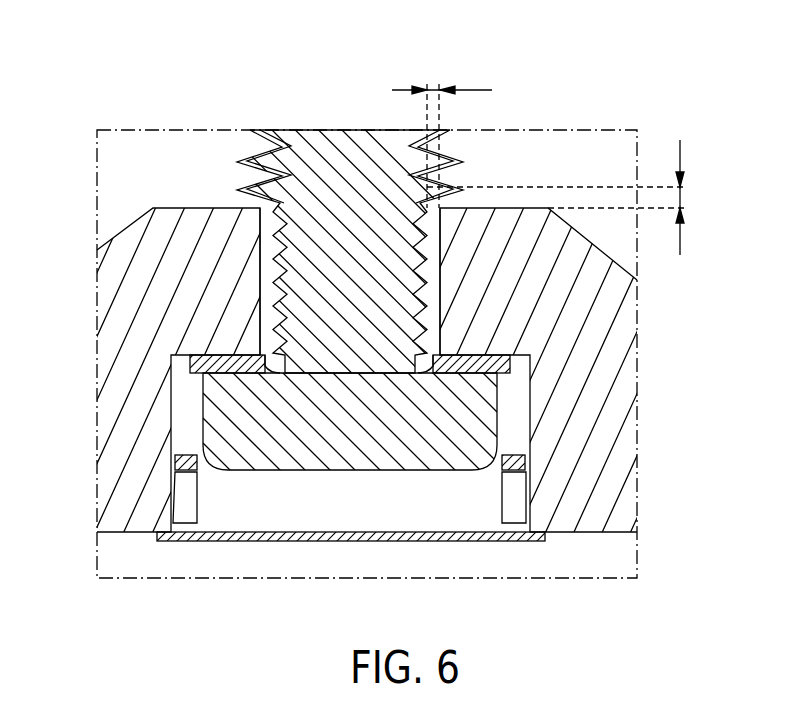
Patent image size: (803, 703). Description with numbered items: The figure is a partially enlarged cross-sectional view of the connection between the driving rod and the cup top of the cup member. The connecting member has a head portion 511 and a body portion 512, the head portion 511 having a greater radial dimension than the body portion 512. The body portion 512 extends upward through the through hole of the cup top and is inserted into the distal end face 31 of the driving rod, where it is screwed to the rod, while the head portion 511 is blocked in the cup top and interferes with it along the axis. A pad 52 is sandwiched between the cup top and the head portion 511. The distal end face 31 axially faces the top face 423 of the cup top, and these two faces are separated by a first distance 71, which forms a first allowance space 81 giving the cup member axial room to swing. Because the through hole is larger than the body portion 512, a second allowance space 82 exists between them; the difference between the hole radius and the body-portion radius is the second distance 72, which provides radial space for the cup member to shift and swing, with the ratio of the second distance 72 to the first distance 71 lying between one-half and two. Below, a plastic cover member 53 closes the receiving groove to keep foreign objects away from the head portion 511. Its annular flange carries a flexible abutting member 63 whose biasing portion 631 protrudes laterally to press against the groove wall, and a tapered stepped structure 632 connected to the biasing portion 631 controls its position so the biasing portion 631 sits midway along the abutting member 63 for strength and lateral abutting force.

The distal end face 31 is at (455, 191).
The pad 52 is at (500, 362).
The cover member 53 is at (526, 542).
The abutting member 63 is at (185, 502).
The first distance 71 is at (682, 196).
The second distance 72 is at (438, 88).
The first allowance space 81 is at (258, 196).
The second allowance space 82 is at (433, 297).
The top face 423 is at (440, 208).
The head portion 511 is at (480, 417).
The body portion 512 is at (343, 160).
The biasing portion 631 is at (530, 502).
The stepped structure 632 is at (528, 518).